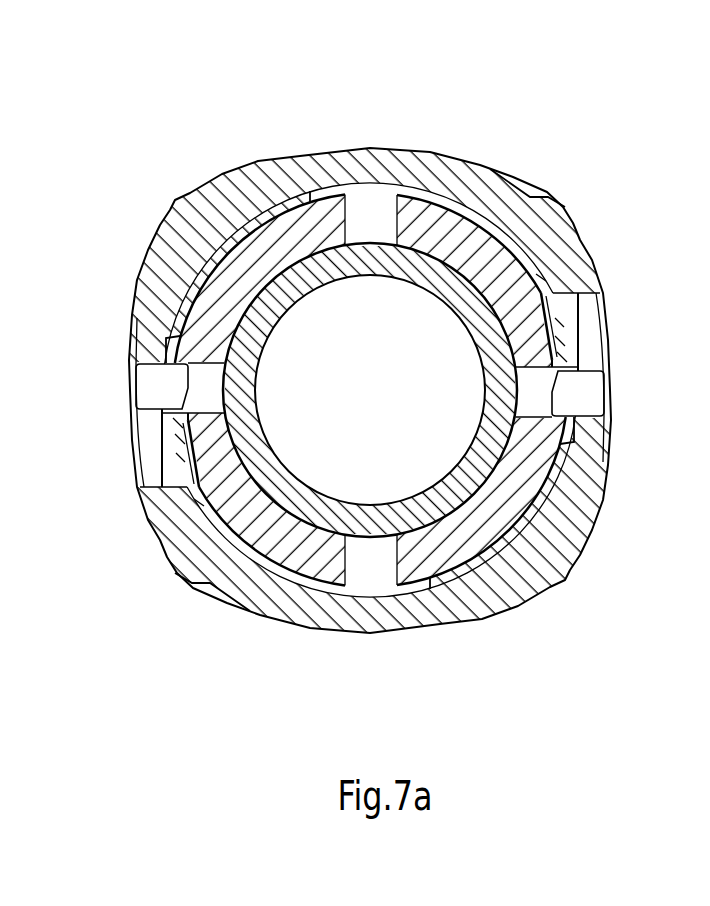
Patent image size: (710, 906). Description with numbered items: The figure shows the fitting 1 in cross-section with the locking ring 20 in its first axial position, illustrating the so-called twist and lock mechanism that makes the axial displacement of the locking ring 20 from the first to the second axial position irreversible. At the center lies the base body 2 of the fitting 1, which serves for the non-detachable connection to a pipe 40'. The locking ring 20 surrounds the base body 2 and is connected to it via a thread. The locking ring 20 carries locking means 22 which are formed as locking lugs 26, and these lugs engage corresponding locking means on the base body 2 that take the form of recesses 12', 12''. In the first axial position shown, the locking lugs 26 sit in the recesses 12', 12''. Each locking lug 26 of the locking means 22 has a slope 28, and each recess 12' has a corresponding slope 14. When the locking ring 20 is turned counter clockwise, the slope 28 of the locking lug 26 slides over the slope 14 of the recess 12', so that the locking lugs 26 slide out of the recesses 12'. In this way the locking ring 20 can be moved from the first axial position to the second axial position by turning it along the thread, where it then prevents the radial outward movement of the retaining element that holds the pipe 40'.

The fitting 1 is at (548, 98).
The base body 2 is at (428, 227).
The recess 12' is at (370, 390).
The recess 12'' is at (371, 390).
The slope 14 is at (582, 356).
The locking ring 20 is at (357, 170).
The locking means 22 is at (592, 360).
The locking lug 26 is at (565, 393).
The slope 28 is at (562, 373).
The pipe 40' is at (360, 290).